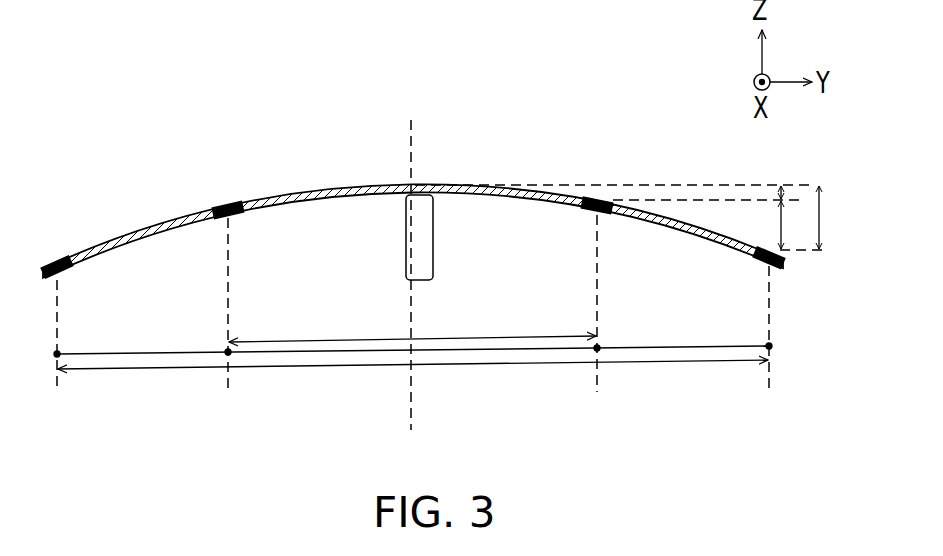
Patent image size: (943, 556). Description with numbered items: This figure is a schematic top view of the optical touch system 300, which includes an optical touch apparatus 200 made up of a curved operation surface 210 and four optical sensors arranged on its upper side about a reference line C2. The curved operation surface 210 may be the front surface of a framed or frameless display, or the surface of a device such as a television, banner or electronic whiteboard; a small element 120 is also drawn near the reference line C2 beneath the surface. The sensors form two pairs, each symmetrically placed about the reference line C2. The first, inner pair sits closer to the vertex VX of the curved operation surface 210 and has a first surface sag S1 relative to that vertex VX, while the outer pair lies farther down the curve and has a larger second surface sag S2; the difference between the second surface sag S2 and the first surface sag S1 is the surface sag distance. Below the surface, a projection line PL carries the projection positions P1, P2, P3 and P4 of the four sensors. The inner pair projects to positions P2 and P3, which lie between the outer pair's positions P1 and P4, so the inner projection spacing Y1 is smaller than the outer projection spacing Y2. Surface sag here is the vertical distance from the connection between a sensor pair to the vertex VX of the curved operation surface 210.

The optical touch apparatus 200 is at (442, 217).
The curved operation surface 210 is at (146, 229).
The light source / sensor element 120 is at (431, 250).
The optical touch system 300 is at (843, 457).
The reference line C2 is at (410, 258).
The vertex VX is at (408, 182).
The first surface sag S1 is at (783, 190).
The second surface sag S2 is at (835, 217).
The projection line PL is at (147, 351).
The projection position P1 is at (58, 390).
The projection position P2 is at (229, 389).
The projection position P3 is at (598, 387).
The projection position P4 is at (770, 386).
The projection spacing Y1 is at (412, 309).
The projection spacing Y2 is at (413, 396).